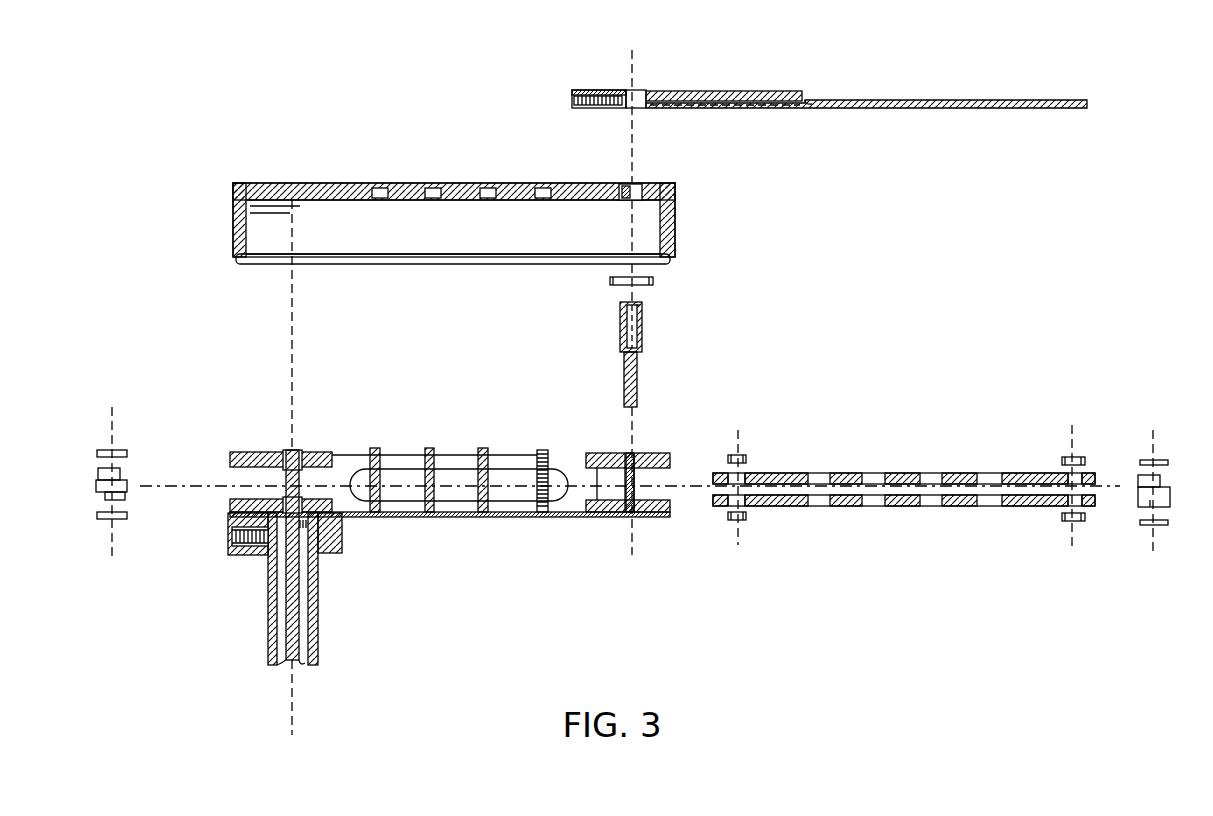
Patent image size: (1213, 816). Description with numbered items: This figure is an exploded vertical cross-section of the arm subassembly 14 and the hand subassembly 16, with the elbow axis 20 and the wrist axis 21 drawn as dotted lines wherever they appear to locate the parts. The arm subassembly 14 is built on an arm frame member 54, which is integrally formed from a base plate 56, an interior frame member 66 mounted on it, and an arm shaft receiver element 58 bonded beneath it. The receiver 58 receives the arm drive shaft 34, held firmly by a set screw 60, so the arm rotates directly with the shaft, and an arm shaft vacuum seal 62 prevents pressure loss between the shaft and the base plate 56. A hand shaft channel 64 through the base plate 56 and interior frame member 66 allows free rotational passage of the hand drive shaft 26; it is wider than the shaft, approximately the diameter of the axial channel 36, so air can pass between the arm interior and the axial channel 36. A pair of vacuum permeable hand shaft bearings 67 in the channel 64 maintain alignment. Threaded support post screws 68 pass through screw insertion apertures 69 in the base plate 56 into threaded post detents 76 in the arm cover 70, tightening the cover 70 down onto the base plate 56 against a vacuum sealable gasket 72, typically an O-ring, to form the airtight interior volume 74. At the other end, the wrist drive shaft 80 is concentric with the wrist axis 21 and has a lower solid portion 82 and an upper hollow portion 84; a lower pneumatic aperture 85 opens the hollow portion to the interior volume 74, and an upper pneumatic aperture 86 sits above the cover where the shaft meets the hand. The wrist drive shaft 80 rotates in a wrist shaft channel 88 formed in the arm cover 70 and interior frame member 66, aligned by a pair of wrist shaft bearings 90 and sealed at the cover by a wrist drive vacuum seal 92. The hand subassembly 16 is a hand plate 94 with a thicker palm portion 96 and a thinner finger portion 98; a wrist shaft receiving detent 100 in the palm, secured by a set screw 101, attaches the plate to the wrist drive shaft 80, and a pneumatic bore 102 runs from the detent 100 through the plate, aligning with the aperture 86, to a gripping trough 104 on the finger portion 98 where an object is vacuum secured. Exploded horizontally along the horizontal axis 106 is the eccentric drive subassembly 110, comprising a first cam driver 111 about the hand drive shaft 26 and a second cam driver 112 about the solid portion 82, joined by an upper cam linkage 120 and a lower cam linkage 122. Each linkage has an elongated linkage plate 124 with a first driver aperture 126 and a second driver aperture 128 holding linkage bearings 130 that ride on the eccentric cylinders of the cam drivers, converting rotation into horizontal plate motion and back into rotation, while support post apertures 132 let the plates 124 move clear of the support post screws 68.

The arm subassembly 14 is at (529, 230).
The hand subassembly 16 is at (812, 91).
The elbow axis 20 is at (292, 370).
The wrist axis 21 is at (632, 60).
The hand drive shaft 26 is at (286, 660).
The arm drive shaft 34 is at (320, 610).
The axial channel 36 is at (305, 670).
The arm frame member 54 is at (515, 535).
The base plate 56 is at (608, 517).
The arm shaft receiver element 58 is at (342, 545).
The set screw 60 is at (232, 540).
The arm shaft vacuum seal 62 is at (250, 555).
The hand shaft channel 64 is at (298, 450).
The interior frame member 66 is at (243, 452).
The hand shaft bearings 67 is at (97, 455).
The support post screws 68 is at (537, 450).
The screw insertion apertures 69 is at (480, 517).
The arm cover 70 is at (293, 183).
The vacuum sealable gasket 72 is at (448, 264).
The interior volume 74 is at (438, 232).
The threaded post detents 76 is at (432, 198).
The wrist drive shaft 80 is at (628, 339).
The lower solid portion 82 is at (637, 375).
The upper hollow portion 84 is at (630, 335).
The lower pneumatic aperture 85 is at (622, 340).
The upper pneumatic aperture 86 is at (643, 308).
The wrist shaft channel 88 is at (636, 184).
The wrist shaft bearings 90 is at (1160, 460).
The wrist drive vacuum seal 92 is at (655, 281).
The hand plate 94 is at (790, 122).
The palm portion 96 is at (582, 95).
The finger portion 98 is at (866, 109).
The wrist shaft receiving detent 100 is at (644, 94).
The set screw 101 is at (623, 106).
The pneumatic bore 102 is at (730, 91).
The gripping trough 104 is at (818, 98).
The horizontal axis 106 is at (197, 490).
The eccentric drive subassembly 110 is at (467, 445).
The first cam driver 111 is at (107, 472).
The second cam driver 112 is at (1090, 488).
The upper cam linkage 120 is at (904, 491).
The lower cam linkage 122 is at (848, 506).
The linkage plate 124 is at (908, 473).
The first driver aperture 126 is at (755, 474).
The second driver aperture 128 is at (1070, 478).
The linkage bearing 130 is at (745, 457).
The support post apertures 132 is at (875, 508).